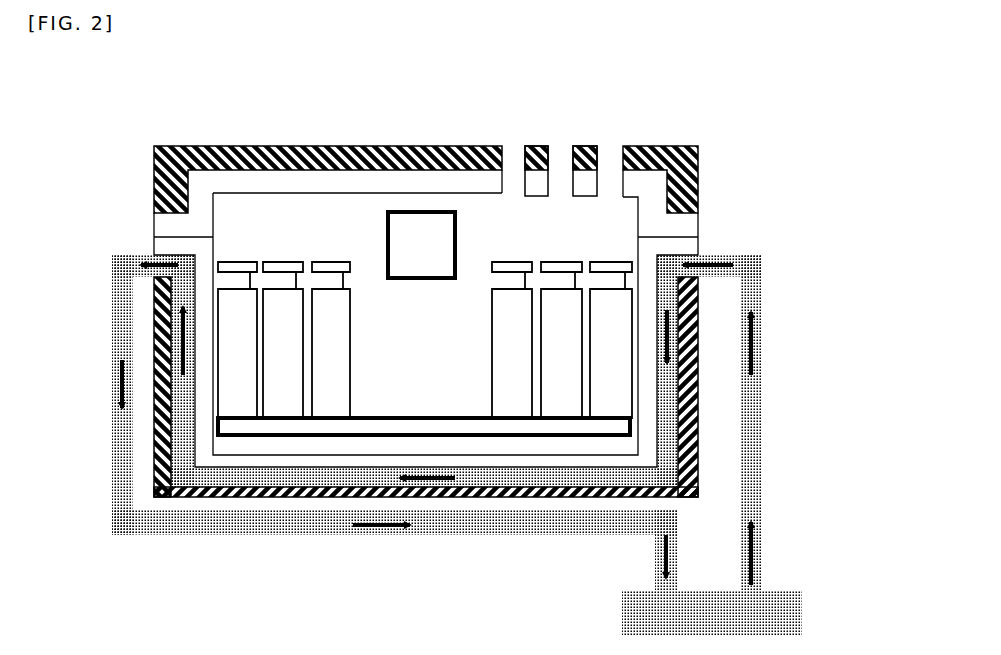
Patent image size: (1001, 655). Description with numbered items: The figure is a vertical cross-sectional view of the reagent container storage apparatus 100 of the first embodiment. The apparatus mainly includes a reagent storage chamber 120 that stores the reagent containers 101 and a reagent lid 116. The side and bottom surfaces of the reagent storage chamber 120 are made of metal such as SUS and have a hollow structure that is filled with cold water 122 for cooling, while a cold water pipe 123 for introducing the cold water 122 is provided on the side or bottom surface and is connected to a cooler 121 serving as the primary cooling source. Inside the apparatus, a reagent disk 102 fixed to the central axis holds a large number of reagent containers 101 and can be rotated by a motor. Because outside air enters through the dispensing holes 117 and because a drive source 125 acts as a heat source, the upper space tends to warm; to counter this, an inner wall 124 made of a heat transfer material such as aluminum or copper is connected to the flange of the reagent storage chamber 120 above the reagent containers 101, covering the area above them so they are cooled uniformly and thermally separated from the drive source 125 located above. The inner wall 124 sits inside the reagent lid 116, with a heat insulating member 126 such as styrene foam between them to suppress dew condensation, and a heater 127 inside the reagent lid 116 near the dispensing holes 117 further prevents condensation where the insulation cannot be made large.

The reagent container storage apparatus 100 is at (285, 490).
The reagent container 101 is at (570, 402).
The reagent disk 102 is at (488, 423).
The reagent lid 116 is at (277, 145).
The dispensing hole 117 is at (607, 148).
The reagent storage chamber 120 is at (690, 246).
The cooler 121 is at (772, 613).
The cold water 122 is at (747, 437).
The cold water pipe 123 is at (140, 258).
The inner wall 124 is at (684, 221).
The drive source 125 is at (418, 230).
The heat insulating member 126 is at (152, 163).
The heater 127 is at (532, 150).